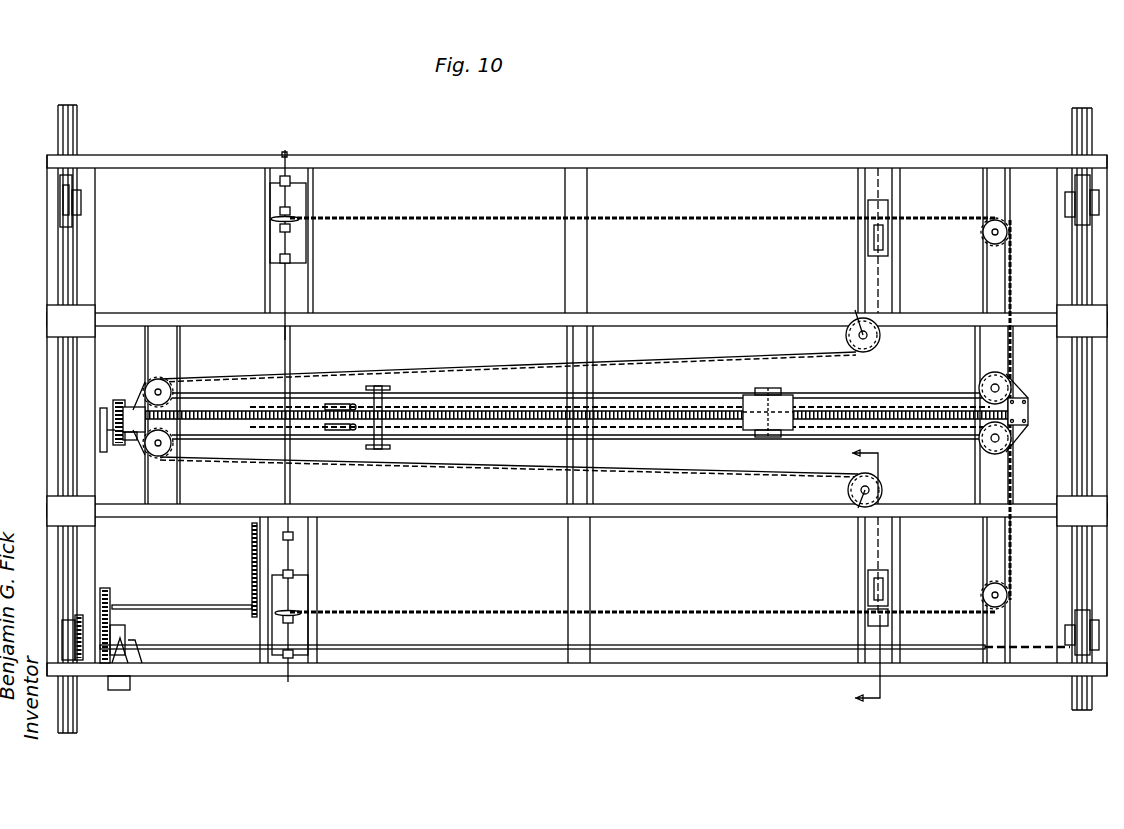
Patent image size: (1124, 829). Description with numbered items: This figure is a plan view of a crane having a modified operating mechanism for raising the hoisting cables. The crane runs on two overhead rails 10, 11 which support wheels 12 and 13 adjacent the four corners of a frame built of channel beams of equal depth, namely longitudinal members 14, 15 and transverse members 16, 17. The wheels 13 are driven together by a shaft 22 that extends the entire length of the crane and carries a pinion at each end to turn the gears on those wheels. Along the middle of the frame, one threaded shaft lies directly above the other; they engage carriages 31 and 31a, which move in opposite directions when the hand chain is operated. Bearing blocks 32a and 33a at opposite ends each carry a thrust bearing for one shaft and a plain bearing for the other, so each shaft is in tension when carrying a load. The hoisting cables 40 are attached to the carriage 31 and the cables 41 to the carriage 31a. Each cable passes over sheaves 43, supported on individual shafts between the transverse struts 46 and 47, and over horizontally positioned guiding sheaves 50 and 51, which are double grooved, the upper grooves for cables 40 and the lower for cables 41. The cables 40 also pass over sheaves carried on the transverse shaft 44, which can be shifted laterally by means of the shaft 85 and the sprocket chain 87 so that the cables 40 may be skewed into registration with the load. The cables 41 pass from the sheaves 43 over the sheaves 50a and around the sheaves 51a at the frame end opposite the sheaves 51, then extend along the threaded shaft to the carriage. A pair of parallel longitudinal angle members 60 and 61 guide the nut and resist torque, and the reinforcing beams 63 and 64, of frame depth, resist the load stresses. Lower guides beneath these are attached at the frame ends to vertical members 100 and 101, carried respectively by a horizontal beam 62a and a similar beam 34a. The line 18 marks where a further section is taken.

The overhead rail 10 is at (67, 131).
The overhead rail 11 is at (1072, 131).
The wheel 12 is at (66, 189).
The wheel 13 is at (70, 660).
The longitudinal member 14 is at (516, 158).
The longitudinal member 15 is at (495, 677).
The transverse member 16 is at (48, 263).
The transverse member 17 is at (1097, 243).
The section line 18 is at (853, 575).
The shaft 22 is at (216, 651).
The carriage 31 is at (748, 398).
The carriage 31a is at (398, 428).
The bearing block 32a is at (135, 408).
The bearing block 33a is at (1030, 400).
The beam 34a is at (1010, 492).
The hoisting cable 40 is at (750, 222).
The hoisting cable 41 is at (878, 286).
The sheave 43 is at (870, 238).
The transverse shaft 44 is at (287, 203).
The transverse strut 46 is at (265, 276).
The transverse strut 47 is at (858, 187).
The guiding sheave 50 is at (985, 233).
The sheave 50a is at (848, 488).
The guiding sheave 51 is at (985, 375).
The sheave 51a is at (178, 380).
The angle member 60 is at (508, 370).
The angle member 61 is at (540, 438).
The beam 62a is at (145, 497).
The reinforcing beam 63 is at (495, 313).
The reinforcing beam 64 is at (455, 518).
The shaft 85 is at (168, 606).
The sprocket chain 87 is at (250, 570).
The vertical member 100 is at (185, 390).
The vertical member 101 is at (185, 440).